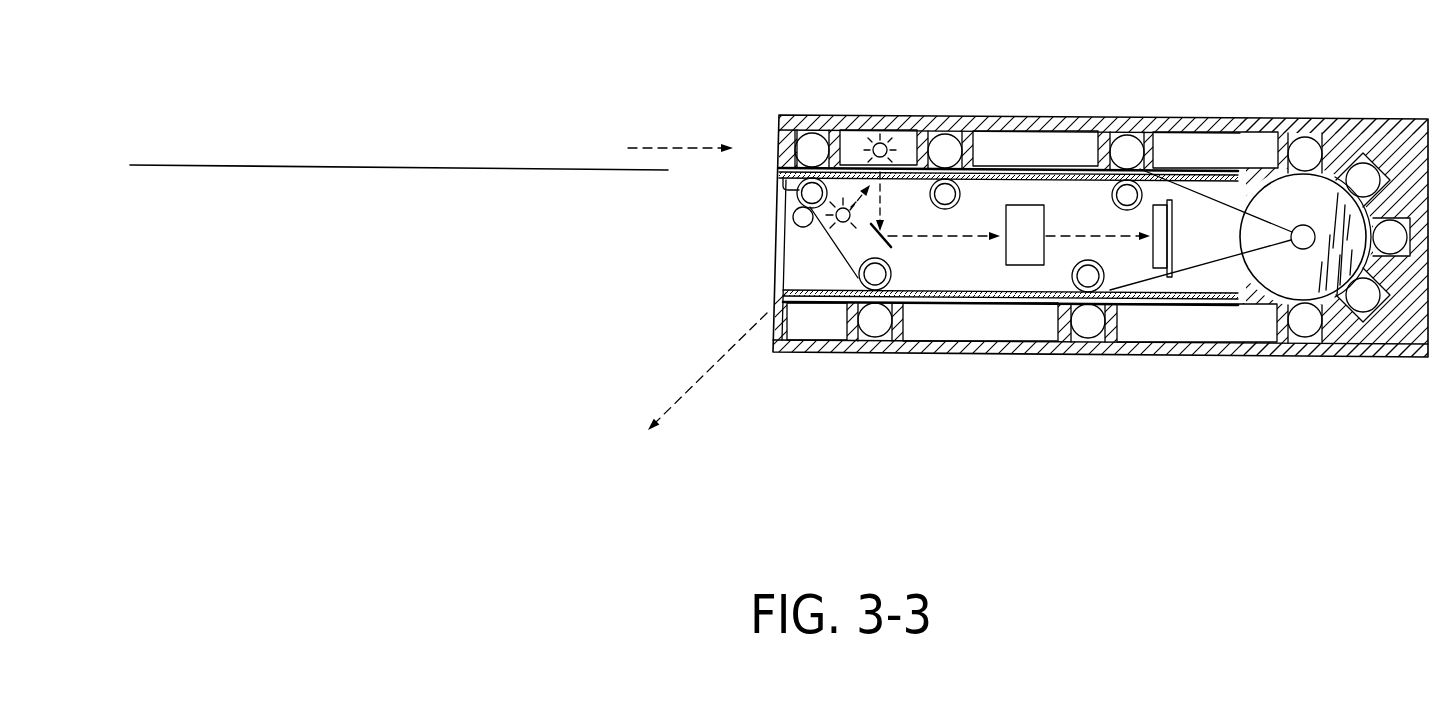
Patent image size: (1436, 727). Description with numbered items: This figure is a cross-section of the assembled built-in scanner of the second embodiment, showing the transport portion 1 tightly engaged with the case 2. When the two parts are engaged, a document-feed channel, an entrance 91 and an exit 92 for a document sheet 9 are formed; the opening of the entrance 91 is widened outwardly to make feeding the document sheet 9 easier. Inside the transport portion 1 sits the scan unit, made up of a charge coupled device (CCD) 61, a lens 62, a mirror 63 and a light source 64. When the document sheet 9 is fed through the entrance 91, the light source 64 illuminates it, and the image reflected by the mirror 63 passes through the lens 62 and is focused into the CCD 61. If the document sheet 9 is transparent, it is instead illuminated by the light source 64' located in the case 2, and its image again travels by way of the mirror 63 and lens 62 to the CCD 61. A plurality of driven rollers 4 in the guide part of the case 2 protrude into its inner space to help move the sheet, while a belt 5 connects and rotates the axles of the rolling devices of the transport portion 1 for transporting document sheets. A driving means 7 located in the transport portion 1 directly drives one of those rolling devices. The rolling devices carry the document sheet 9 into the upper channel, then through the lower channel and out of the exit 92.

The transport portion 1 is at (931, 344).
The case 2 is at (1360, 140).
The driven rollers 4 is at (1127, 150).
The belt 5 is at (1210, 276).
The driving means 7 is at (793, 218).
The document sheet 9 is at (478, 167).
The charge coupled device (CCD) 61 is at (1175, 212).
The lens 62 is at (1027, 258).
The mirror 63 is at (866, 240).
The light source 64 is at (775, 241).
The light source 64' is at (886, 95).
The entrance 91 is at (770, 158).
The exit 92 is at (778, 303).